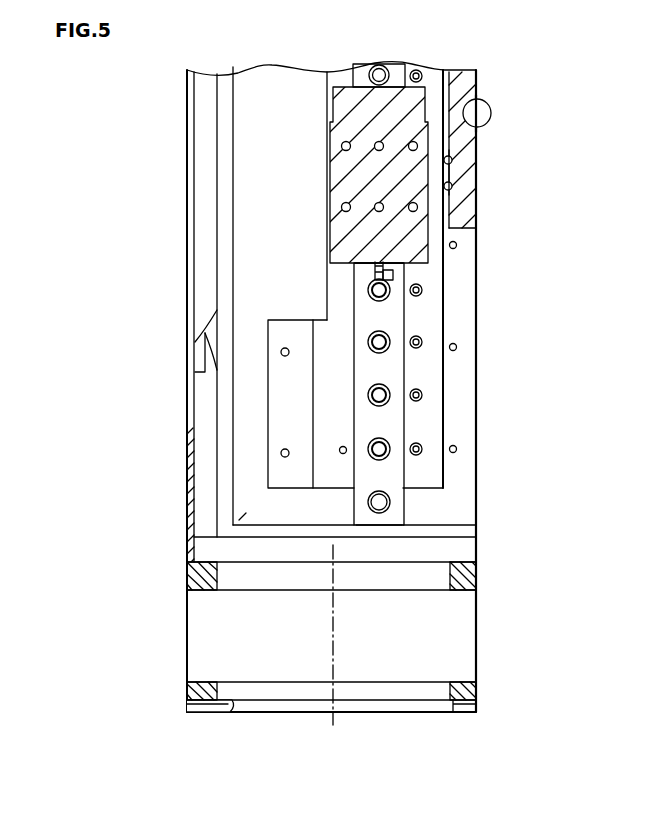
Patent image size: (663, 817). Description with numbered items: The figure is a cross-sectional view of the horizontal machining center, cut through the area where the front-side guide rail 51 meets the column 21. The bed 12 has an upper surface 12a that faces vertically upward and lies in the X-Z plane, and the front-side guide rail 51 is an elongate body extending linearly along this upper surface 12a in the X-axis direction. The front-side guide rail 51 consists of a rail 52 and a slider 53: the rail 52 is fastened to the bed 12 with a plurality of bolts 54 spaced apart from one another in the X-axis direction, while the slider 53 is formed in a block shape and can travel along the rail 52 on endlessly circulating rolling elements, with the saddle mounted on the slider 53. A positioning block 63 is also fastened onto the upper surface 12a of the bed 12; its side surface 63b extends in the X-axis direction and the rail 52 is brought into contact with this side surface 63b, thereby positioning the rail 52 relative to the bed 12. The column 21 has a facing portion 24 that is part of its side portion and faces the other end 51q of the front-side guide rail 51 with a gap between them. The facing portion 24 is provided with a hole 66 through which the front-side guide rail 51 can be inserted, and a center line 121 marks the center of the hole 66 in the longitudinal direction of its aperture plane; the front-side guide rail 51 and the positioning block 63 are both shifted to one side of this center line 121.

The bed 12 is at (187, 122).
The upper surface 12a is at (258, 198).
The slider 53 is at (415, 172).
The positioning block 63 is at (433, 263).
The side surface 63b is at (398, 296).
The bolts 54 is at (390, 338).
The rail 52 is at (387, 420).
The front-side guide rail 51 is at (351, 422).
The other end 51q is at (381, 525).
The column 21 is at (187, 575).
The facing portion 24 is at (455, 575).
The hole 66 is at (448, 556).
The center line 121 is at (333, 660).